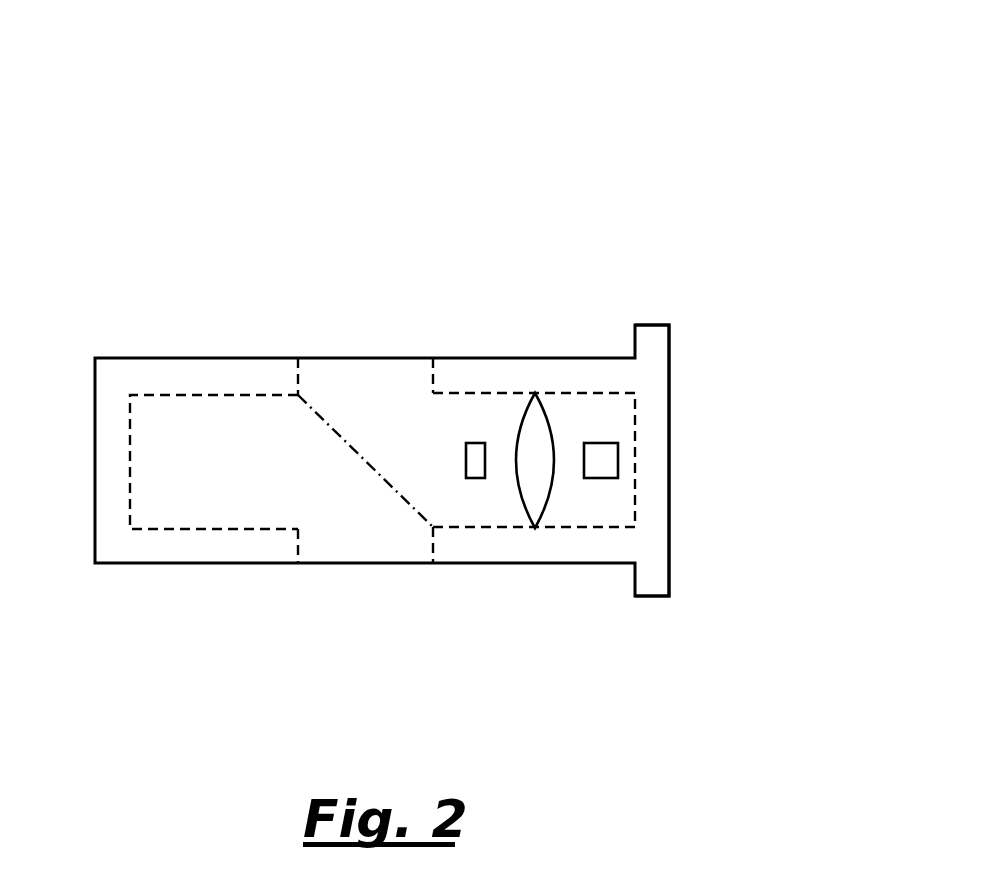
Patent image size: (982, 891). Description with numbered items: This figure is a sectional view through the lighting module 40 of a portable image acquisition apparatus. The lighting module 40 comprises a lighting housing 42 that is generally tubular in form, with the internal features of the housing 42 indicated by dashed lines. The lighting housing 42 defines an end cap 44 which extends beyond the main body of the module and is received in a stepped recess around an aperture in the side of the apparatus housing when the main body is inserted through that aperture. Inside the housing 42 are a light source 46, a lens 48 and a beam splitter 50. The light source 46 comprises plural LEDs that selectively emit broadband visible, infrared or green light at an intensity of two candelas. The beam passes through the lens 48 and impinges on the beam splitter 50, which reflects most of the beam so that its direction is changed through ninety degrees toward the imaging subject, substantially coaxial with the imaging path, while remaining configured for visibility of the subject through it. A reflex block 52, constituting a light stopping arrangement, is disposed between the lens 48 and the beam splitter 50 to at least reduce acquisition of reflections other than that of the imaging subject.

The lighting module 40 is at (509, 224).
The lighting housing 42 is at (178, 553).
The end cap 44 is at (652, 588).
The light source 46 is at (621, 458).
The lens 48 is at (540, 445).
The beam splitter 50 is at (360, 462).
The reflex block 52 is at (466, 441).